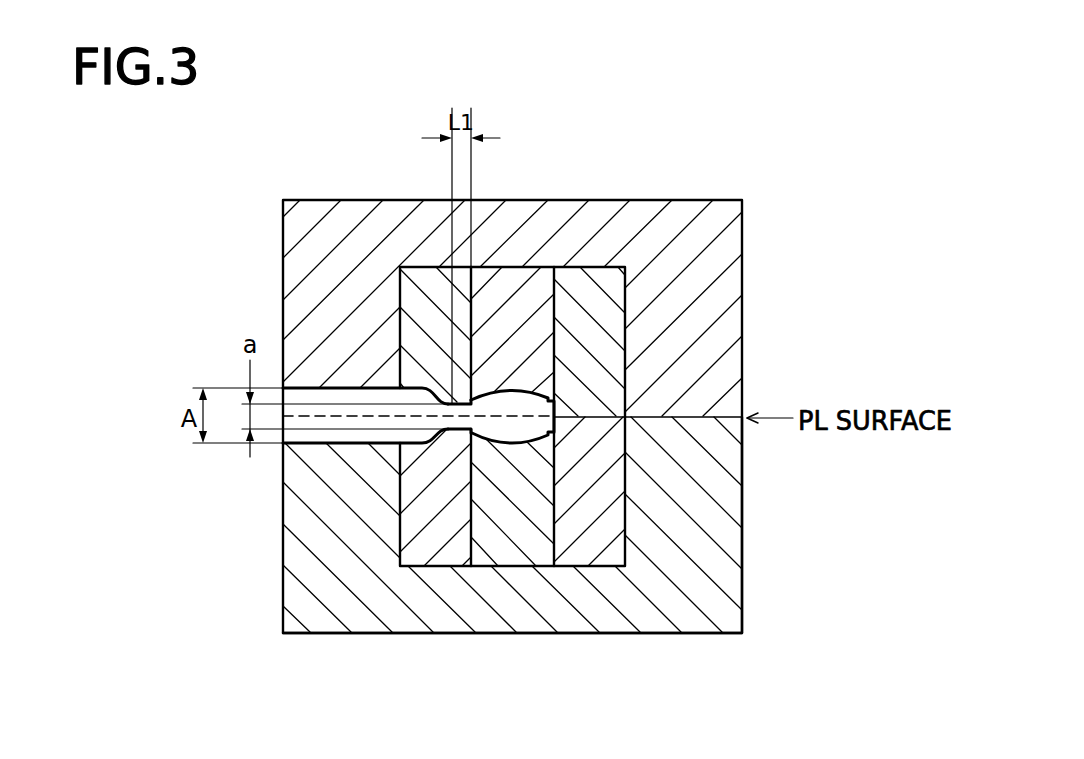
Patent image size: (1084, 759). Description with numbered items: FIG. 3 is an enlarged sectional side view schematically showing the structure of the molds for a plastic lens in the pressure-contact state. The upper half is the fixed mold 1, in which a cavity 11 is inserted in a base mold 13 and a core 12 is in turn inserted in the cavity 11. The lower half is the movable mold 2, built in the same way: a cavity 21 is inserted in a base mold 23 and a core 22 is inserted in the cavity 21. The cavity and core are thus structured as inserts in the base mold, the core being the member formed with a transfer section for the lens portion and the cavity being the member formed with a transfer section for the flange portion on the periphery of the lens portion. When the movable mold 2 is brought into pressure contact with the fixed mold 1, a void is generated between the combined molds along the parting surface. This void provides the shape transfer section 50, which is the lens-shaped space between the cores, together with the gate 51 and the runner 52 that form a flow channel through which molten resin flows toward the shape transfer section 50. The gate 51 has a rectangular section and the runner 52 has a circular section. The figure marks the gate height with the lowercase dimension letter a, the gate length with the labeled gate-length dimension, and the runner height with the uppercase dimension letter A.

The fixed mold 1 is at (675, 198).
The movable mold 2 is at (695, 637).
The cavity 11 is at (418, 283).
The core 12 is at (513, 283).
The base mold 13 is at (717, 285).
The cavity 21 is at (412, 557).
The core 22 is at (512, 553).
The base mold 23 is at (717, 523).
The shape transfer section 50 is at (548, 386).
The gate 51 is at (460, 422).
The runner 52 is at (303, 444).